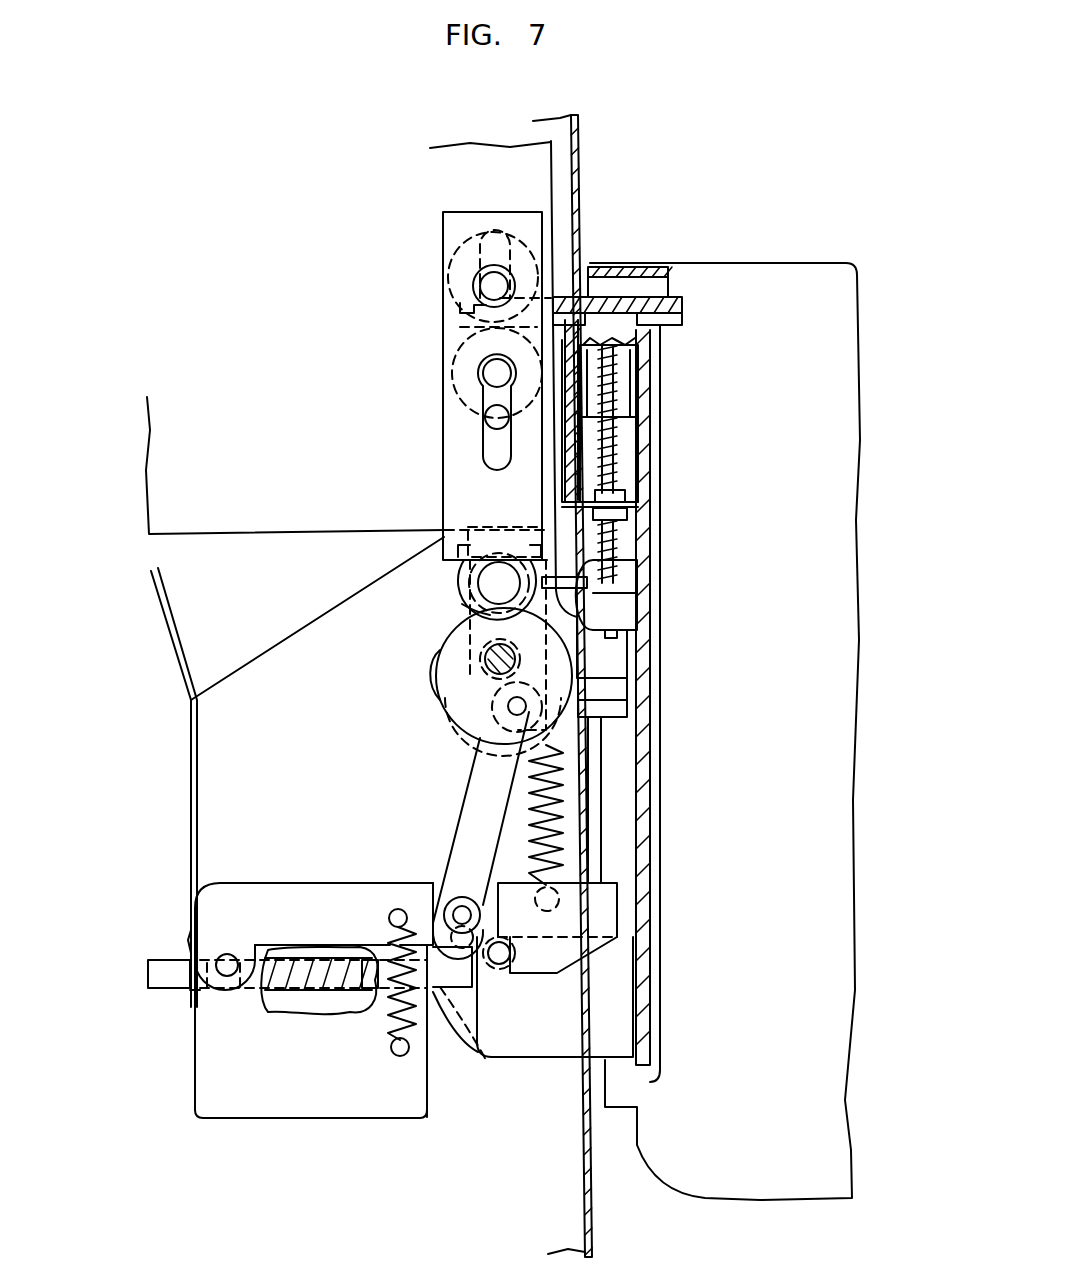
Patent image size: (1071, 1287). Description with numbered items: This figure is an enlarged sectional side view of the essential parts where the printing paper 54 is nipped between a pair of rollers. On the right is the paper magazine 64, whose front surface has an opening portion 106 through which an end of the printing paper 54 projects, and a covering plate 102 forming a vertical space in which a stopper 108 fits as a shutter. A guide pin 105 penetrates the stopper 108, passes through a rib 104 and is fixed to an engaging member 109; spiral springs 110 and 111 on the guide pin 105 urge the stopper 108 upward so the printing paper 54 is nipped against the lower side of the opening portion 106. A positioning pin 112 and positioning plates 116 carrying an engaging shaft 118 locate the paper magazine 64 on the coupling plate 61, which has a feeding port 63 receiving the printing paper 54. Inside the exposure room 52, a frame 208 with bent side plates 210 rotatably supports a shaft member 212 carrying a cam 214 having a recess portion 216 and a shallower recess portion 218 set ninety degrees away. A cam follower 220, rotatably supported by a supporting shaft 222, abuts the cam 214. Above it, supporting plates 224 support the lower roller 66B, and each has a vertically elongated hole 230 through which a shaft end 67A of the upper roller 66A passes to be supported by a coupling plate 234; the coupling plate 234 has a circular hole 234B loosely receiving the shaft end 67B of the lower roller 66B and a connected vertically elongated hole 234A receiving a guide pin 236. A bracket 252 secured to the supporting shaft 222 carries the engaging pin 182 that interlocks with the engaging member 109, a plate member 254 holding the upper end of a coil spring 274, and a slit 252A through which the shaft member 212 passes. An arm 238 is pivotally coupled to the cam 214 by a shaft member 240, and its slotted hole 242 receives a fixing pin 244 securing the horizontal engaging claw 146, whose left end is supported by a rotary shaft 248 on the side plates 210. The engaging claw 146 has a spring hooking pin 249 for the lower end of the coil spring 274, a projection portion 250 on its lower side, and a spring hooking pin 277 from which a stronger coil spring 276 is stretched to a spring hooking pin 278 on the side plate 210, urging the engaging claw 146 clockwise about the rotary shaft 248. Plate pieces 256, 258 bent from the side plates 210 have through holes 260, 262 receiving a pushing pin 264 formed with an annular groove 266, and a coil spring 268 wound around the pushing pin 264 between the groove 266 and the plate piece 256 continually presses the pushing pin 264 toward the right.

The exposure room 52 is at (242, 599).
The printing paper 54 is at (598, 312).
The coupling plate 61 is at (592, 158).
The feeding port 63 is at (577, 212).
The paper magazine 64 is at (837, 257).
The upper roller 66A is at (452, 226).
The lower roller 66B is at (455, 358).
The shaft end 67A is at (478, 286).
The shaft end 67B is at (483, 374).
The covering plate 102 is at (613, 442).
The rib 104 is at (627, 516).
The guide pin 105 is at (625, 495).
The opening portion 106 is at (653, 317).
The stopper 108 is at (638, 383).
The engaging member 109 is at (613, 612).
The spiral spring 110 is at (625, 420).
The spiral spring 111 is at (620, 583).
The positioning pin 112 is at (620, 687).
The positioning plate 116 is at (547, 965).
The engaging shaft 118 is at (496, 965).
The engaging claw 146 is at (260, 903).
The engaging pin 182 is at (620, 553).
The frame 208 is at (186, 1099).
The side plate 210 is at (278, 1109).
The shaft member 212 is at (488, 678).
The cam 214 is at (437, 623).
The recess portion 216 is at (458, 592).
The recess portion 218 is at (485, 660).
The cam follower 220 is at (470, 543).
The supporting shaft 222 is at (452, 514).
The supporting plate 224 is at (268, 511).
The vertically elongated hole 230 is at (503, 247).
The coupling plate 234 is at (435, 475).
The vertically elongated hole 234A is at (488, 445).
The circular hole 234B is at (465, 312).
The guide pin 236 is at (485, 417).
The arm 238 is at (470, 816).
The shaft member 240 is at (585, 705).
The slotted hole 242 is at (448, 932).
The fixing pin 244 is at (460, 908).
The rotary shaft 248 is at (225, 954).
The spring hooking pin 249 is at (562, 896).
The projection portion 250 is at (555, 997).
The bracket 252 is at (458, 700).
The slit 252A is at (470, 742).
The plate member 254 is at (577, 770).
The plate piece 256 is at (190, 946).
The plate piece 258 is at (436, 1003).
The through hole 260 is at (183, 993).
The through hole 262 is at (488, 1063).
The pushing pin 264 is at (153, 972).
The annular groove 266 is at (365, 1000).
The coil spring 268 is at (310, 993).
The coil spring 274 is at (553, 814).
The coil spring 276 is at (434, 1000).
The spring hooking pin 277 is at (395, 913).
The spring hooking pin 278 is at (404, 1056).